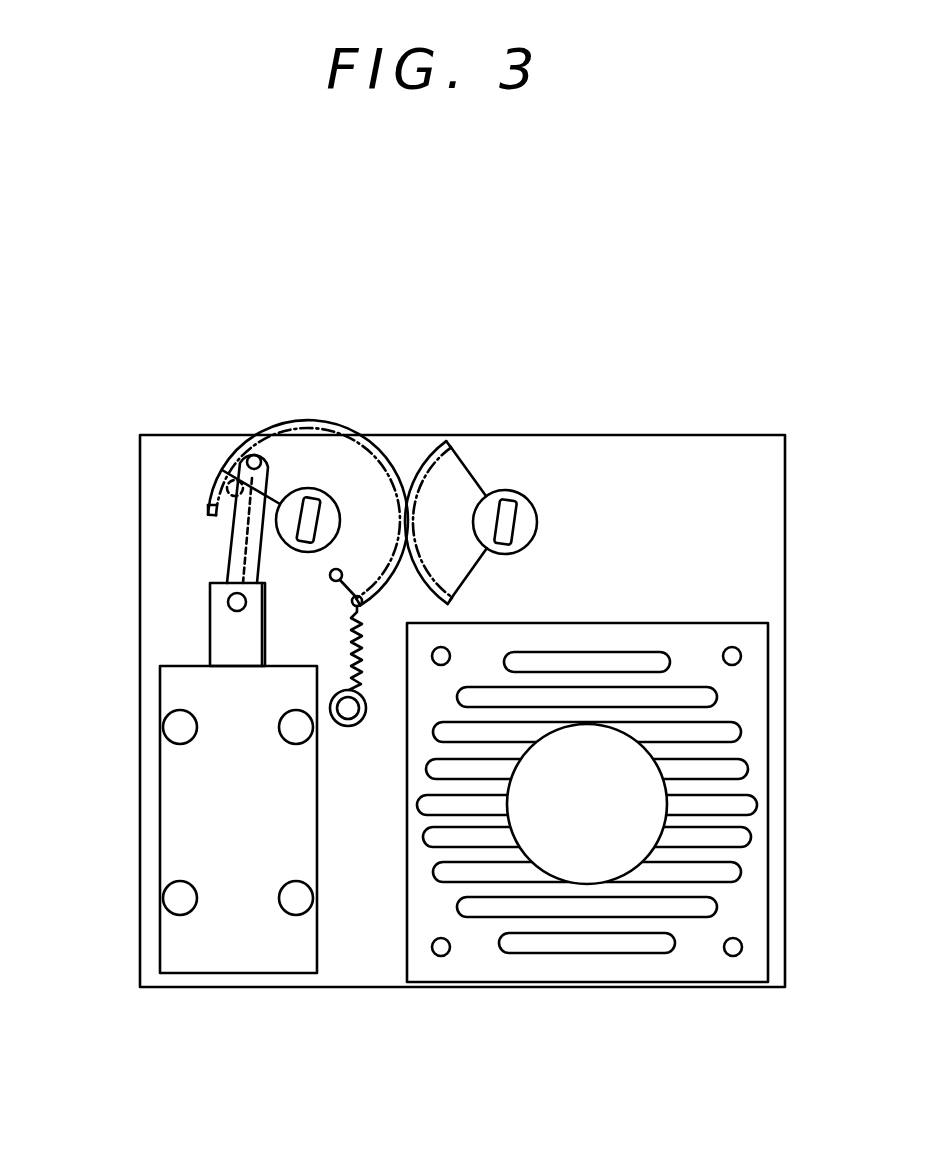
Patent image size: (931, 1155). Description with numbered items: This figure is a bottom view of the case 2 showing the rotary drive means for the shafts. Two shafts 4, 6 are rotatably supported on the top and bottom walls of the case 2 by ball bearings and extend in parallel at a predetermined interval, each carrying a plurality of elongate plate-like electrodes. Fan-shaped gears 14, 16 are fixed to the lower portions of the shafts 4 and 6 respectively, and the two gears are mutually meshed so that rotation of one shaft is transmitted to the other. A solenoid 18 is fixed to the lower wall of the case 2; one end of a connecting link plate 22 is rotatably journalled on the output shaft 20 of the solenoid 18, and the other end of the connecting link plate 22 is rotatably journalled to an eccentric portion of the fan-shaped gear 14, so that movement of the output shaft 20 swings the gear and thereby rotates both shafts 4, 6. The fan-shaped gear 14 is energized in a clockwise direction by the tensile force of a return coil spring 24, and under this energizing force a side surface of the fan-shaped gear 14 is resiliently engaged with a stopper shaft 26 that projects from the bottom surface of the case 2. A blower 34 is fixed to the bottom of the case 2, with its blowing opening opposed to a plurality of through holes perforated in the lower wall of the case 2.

The case 2 is at (661, 435).
The shaft 4 is at (322, 500).
The shaft 6 is at (508, 490).
The fan-shaped gear 14 is at (283, 421).
The fan-shaped gear 16 is at (408, 462).
The solenoid 18 is at (248, 960).
The output shaft 20 is at (220, 597).
The connecting link plate 22 is at (242, 510).
The return coil spring 24 is at (347, 642).
The stopper shaft 26 is at (331, 573).
The blower 34 is at (690, 938).